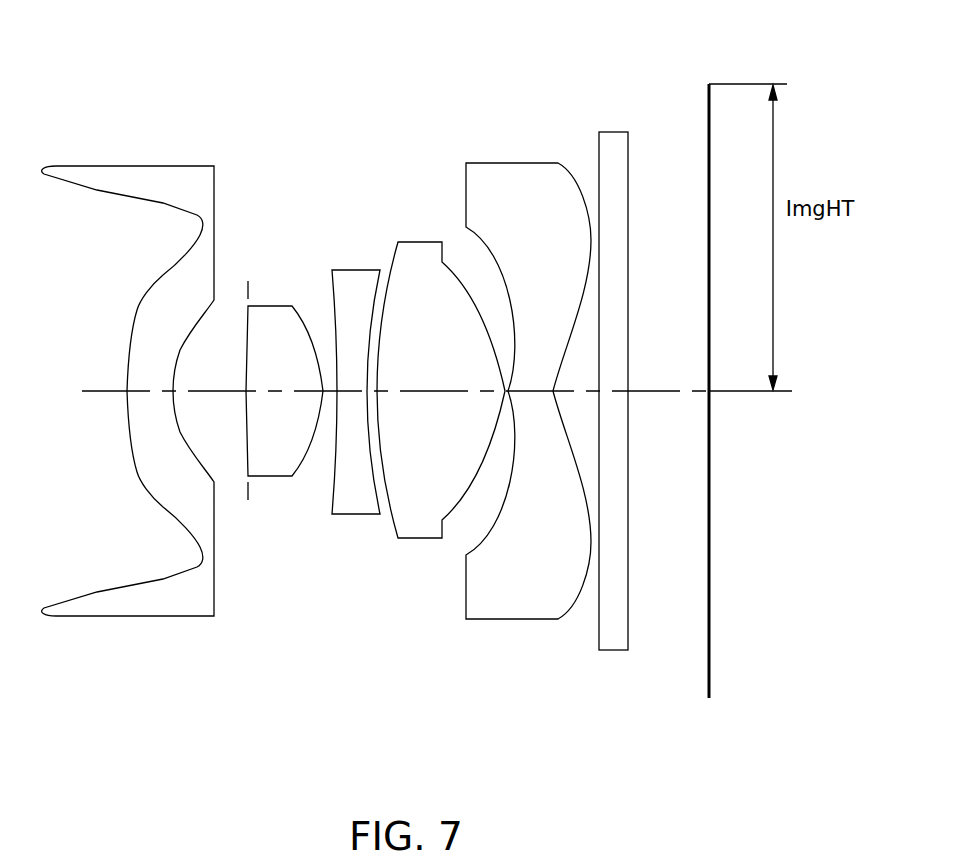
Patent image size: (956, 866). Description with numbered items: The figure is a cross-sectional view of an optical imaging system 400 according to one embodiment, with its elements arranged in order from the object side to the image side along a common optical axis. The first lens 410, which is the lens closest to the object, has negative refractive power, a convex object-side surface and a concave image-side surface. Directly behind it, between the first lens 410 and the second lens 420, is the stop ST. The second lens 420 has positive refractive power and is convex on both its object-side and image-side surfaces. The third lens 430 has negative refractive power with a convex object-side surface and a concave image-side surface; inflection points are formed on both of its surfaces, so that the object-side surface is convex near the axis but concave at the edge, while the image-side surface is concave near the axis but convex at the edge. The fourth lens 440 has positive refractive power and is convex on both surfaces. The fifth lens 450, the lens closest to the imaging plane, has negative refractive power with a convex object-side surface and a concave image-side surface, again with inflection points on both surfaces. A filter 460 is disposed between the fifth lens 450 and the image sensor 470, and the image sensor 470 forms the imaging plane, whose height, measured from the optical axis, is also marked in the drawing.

The optical imaging system 400 is at (386, 136).
The first lens 410 is at (164, 616).
The stop ST is at (249, 275).
The second lens 420 is at (272, 476).
The third lens 430 is at (352, 514).
The fourth lens 440 is at (420, 538).
The fifth lens 450 is at (512, 619).
The filter 460 is at (611, 642).
The image sensor 470 is at (708, 690).